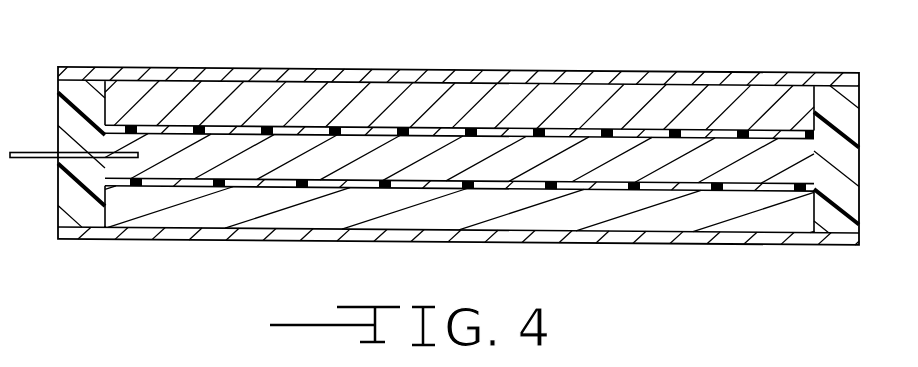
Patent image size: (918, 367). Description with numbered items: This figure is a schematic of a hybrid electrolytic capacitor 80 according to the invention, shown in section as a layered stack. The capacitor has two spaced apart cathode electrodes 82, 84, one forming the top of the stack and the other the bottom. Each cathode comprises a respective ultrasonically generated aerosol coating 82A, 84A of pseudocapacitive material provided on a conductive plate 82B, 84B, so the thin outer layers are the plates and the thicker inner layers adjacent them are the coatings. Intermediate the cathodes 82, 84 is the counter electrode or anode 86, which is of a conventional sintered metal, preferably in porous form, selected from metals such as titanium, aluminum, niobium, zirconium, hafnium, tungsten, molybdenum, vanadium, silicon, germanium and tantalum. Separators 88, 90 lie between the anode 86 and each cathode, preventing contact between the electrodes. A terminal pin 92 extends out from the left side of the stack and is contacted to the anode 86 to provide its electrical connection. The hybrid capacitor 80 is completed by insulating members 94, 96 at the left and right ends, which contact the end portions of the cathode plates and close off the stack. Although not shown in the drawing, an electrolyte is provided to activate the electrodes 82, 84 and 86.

The electrolytic capacitor 80 is at (777, 62).
The cathode electrode 82 is at (357, 62).
The ultrasonically generated aerosol coating 82A is at (617, 105).
The conductive plate 82B is at (587, 35).
The cathode electrode 84 is at (675, 250).
The ultrasonically generated aerosol coating 84A is at (233, 210).
The conductive plate 84B is at (552, 243).
The anode 86 is at (217, 157).
The separator 88 is at (694, 133).
The separator 90 is at (740, 187).
The terminal pin 92 is at (30, 158).
The insulating member 94 is at (70, 115).
The insulating member 96 is at (842, 223).